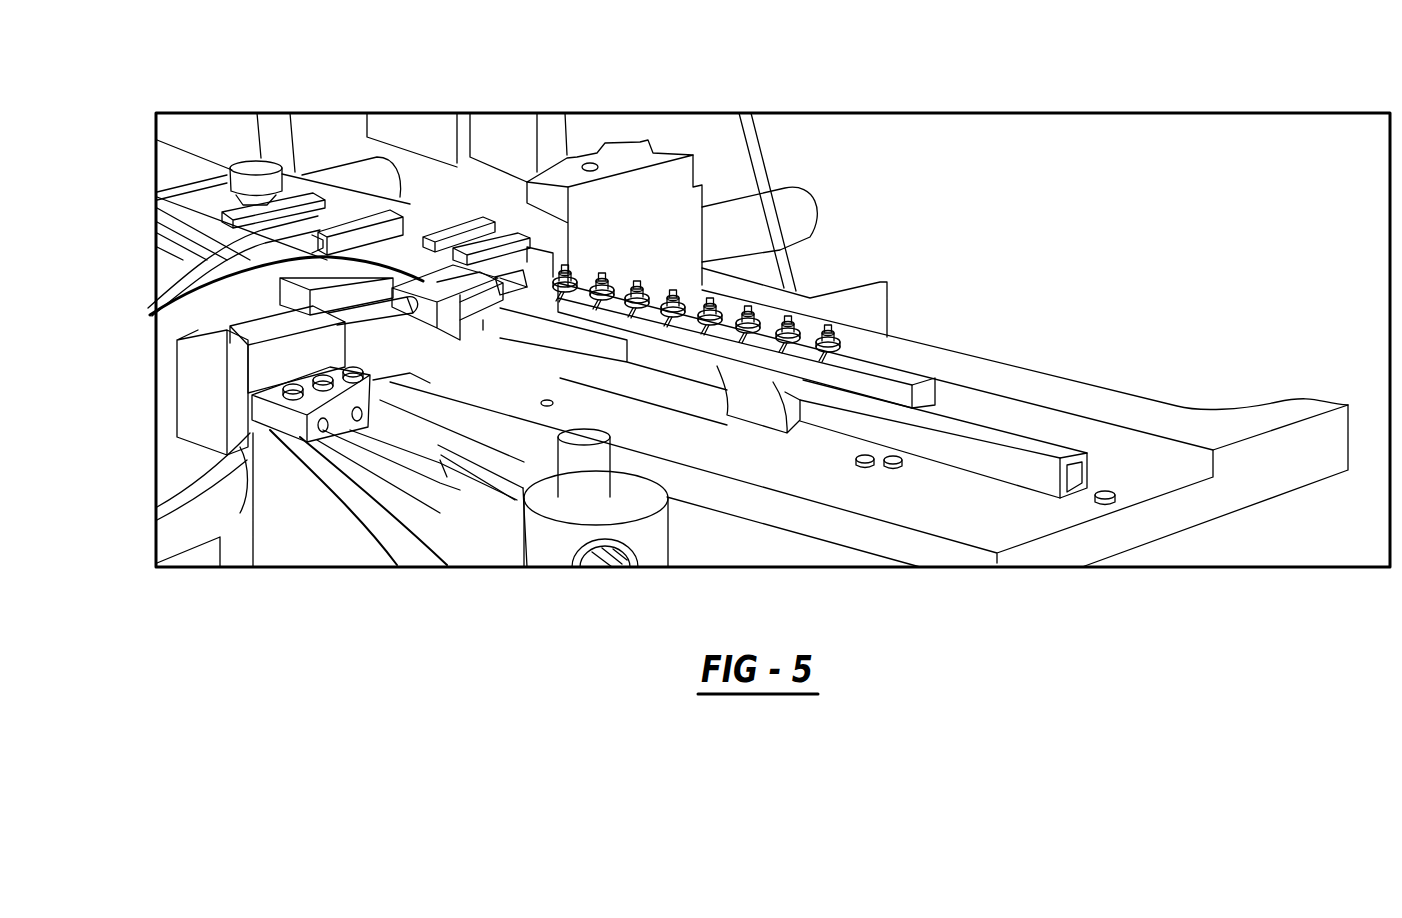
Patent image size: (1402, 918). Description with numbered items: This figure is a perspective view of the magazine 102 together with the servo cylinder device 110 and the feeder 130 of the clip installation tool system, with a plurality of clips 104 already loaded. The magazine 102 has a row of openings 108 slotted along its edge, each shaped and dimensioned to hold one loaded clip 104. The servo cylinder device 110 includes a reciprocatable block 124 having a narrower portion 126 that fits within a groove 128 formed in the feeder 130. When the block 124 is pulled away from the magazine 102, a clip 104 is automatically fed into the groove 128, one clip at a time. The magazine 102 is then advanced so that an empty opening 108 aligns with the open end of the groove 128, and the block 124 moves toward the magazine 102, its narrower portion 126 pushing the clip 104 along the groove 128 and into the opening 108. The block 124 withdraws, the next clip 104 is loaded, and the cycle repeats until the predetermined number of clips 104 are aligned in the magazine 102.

The magazine 102 is at (806, 276).
The clip 104 is at (836, 337).
The opening 108 is at (832, 338).
The servo cylinder device 110 is at (457, 303).
The reciprocatable block 124 is at (152, 314).
The narrower portion 126 is at (510, 285).
The groove 128 is at (505, 285).
The feeder 130 is at (483, 320).